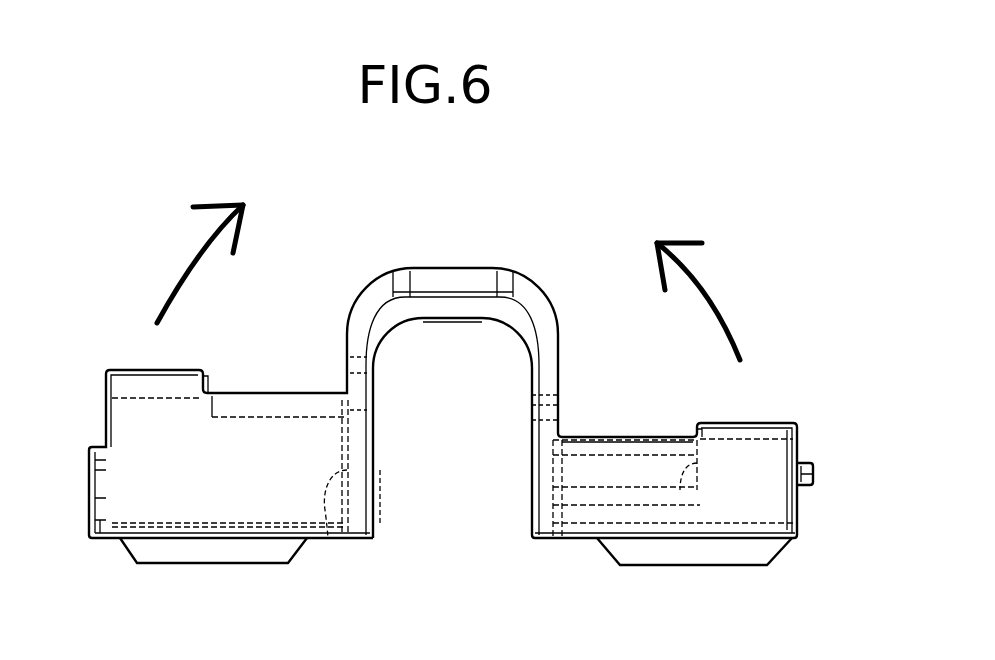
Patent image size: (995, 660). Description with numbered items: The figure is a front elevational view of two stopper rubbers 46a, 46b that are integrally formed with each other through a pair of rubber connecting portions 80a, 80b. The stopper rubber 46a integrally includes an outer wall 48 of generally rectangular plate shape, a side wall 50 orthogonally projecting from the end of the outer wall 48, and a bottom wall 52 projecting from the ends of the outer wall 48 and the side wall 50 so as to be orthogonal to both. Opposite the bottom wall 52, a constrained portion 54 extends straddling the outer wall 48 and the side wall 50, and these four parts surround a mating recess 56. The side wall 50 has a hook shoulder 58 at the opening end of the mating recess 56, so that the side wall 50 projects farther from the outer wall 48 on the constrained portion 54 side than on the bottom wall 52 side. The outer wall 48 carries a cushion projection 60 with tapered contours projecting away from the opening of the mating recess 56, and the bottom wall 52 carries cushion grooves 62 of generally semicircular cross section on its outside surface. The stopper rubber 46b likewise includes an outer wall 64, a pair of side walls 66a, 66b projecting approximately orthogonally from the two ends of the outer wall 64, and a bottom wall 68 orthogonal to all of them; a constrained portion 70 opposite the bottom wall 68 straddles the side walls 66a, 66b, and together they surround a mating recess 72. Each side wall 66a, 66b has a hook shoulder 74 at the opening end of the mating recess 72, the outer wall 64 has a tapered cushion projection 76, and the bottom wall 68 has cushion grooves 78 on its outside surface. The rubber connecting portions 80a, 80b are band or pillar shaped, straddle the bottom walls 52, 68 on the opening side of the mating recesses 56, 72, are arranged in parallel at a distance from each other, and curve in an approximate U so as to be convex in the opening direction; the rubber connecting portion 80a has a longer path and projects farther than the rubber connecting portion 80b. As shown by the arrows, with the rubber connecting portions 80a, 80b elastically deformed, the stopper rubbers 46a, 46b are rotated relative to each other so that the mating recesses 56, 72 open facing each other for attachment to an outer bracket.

The stopper rubber 46a is at (97, 380).
The stopper rubber 46b is at (765, 416).
The outer wall 48 is at (150, 540).
The side wall 50 is at (255, 487).
The bottom wall 52 is at (365, 468).
The constrained portion 54 is at (96, 487).
The mating recess 56 is at (325, 537).
The hook shoulder 58 is at (208, 390).
The cushion projection 60 is at (212, 563).
The cushion grooves 62 is at (382, 527).
The outer wall 64 is at (758, 532).
The side wall 66a is at (648, 505).
The side wall 66b is at (633, 470).
The bottom wall 68 is at (530, 468).
The constrained portion 70 is at (806, 472).
The mating recess 72 is at (580, 507).
The hook shoulder 74 is at (690, 430).
The cushion projection 76 is at (722, 555).
The cushion grooves 78 is at (526, 527).
The rubber connecting portion 80a is at (380, 298).
The rubber connecting portion 80b is at (453, 307).